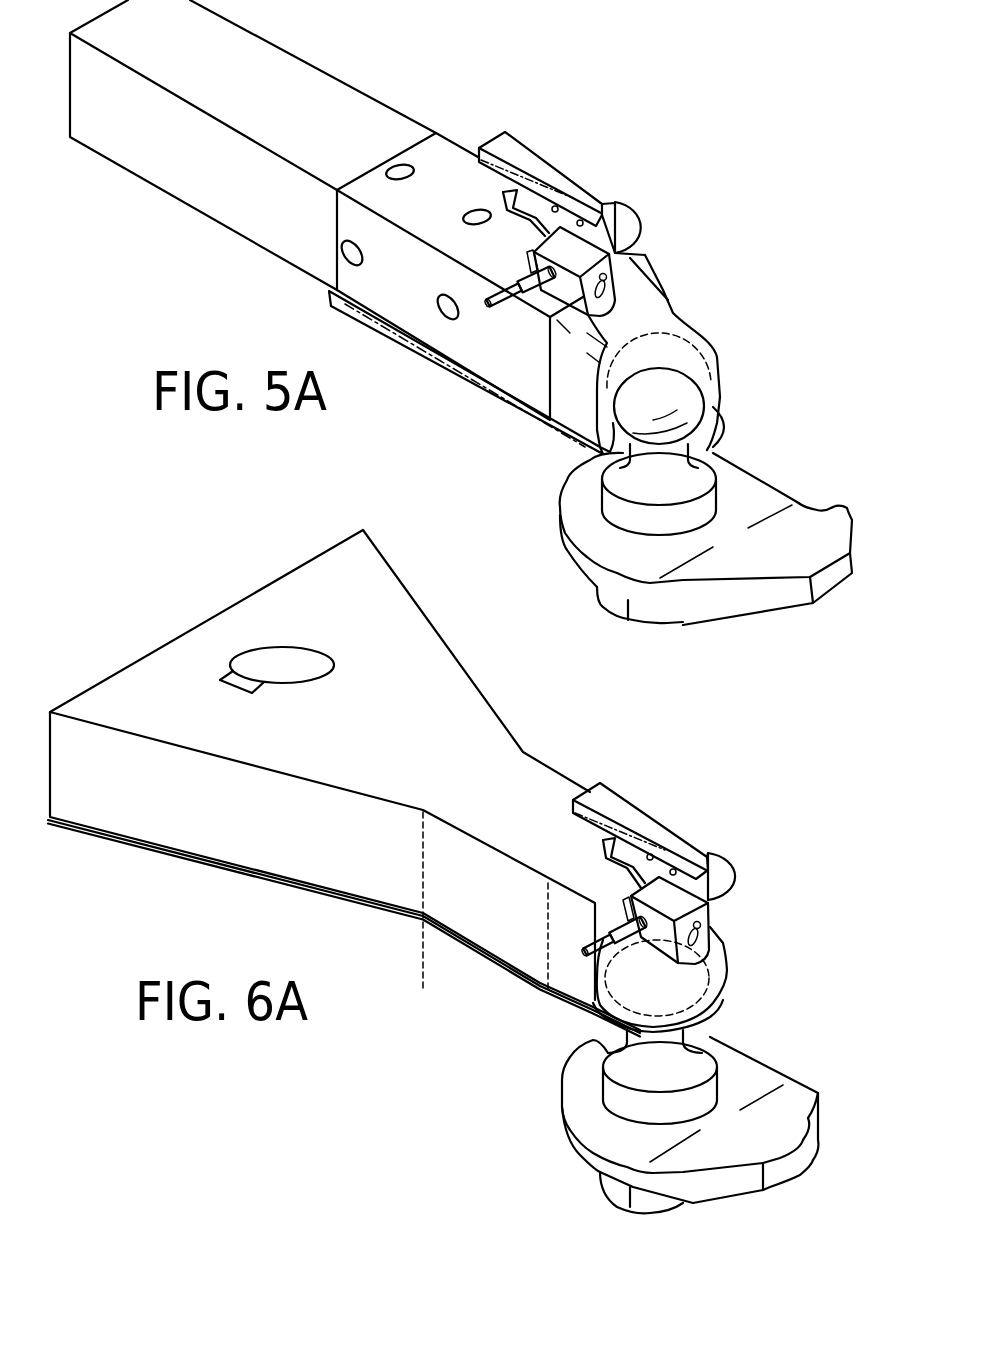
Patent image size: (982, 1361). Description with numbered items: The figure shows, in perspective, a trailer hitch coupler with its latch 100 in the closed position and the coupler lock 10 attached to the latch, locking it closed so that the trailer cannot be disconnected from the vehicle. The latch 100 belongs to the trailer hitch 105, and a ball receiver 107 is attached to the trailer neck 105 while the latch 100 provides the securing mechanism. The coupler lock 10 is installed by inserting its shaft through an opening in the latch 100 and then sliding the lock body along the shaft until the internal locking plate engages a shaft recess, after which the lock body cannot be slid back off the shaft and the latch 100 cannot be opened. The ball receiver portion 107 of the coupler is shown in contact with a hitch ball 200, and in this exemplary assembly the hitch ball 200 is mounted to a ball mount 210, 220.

In FIG. 5A, the coupler lock 10 is at (605, 245).
In FIG. 6A, the coupler lock 10 is at (700, 887).
In FIG. 5A, the latch 100 is at (528, 135).
In FIG. 6A, the latch 100 is at (640, 790).
In FIG. 5A, the trailer hitch 105 is at (182, 203).
In FIG. 6A, the trailer hitch 105 is at (152, 848).
In FIG. 5A, the ball receiver 107 is at (587, 447).
In FIG. 6A, the ball receiver 107 is at (597, 1020).
In FIG. 5A, the hitch ball 200 is at (680, 400).
In FIG. 6A, the hitch ball 200 is at (693, 987).
In FIG. 5A, the ball mount 210 is at (747, 493).
In FIG. 6A, the ball mount 210 is at (767, 1082).
In FIG. 5A, the ball mount 220 is at (620, 603).
In FIG. 6A, the ball mount 220 is at (610, 1178).